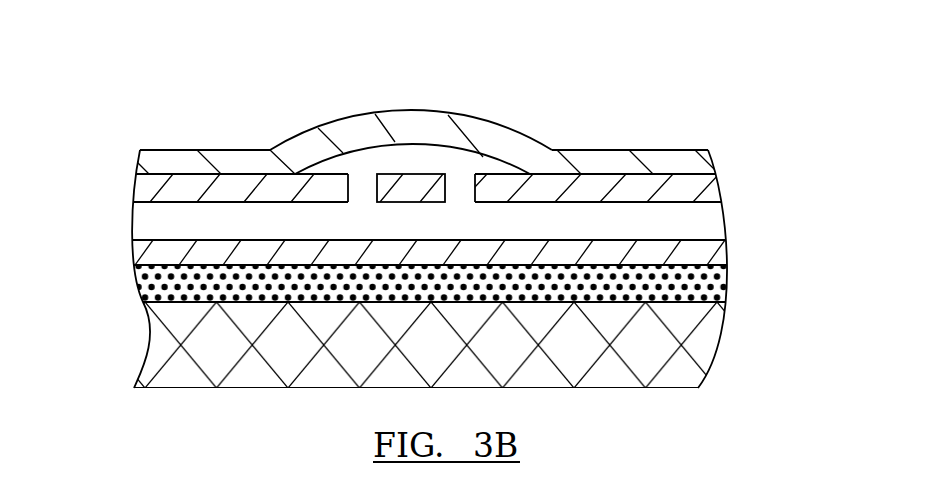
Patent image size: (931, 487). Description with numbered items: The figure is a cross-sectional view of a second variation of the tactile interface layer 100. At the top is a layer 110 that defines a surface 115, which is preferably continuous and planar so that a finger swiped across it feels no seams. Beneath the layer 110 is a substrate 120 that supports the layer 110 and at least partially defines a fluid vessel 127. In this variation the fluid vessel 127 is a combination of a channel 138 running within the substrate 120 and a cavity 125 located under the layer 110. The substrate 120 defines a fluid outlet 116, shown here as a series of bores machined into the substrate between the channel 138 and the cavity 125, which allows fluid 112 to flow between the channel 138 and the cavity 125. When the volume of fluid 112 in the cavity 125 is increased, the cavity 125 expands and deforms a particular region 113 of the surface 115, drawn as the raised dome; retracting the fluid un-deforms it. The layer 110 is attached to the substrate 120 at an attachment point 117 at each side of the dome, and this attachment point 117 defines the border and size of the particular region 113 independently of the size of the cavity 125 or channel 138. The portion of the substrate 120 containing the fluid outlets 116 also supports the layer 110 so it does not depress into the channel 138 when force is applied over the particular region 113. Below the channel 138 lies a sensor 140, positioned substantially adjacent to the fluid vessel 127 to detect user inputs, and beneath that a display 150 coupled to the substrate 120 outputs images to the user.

The tactile interface layer 100 is at (627, 102).
The layer 110 is at (357, 130).
The fluid 112 is at (622, 223).
The particular region 113 is at (500, 120).
The surface 115 is at (212, 148).
The fluid outlet 116 is at (347, 188).
The attachment point 117 is at (295, 174).
The substrate 120 is at (710, 192).
The cavity 125 is at (422, 163).
The fluid vessel 127 is at (477, 225).
The channel 138 is at (708, 232).
The sensor 140 is at (140, 285).
The display 150 is at (160, 345).